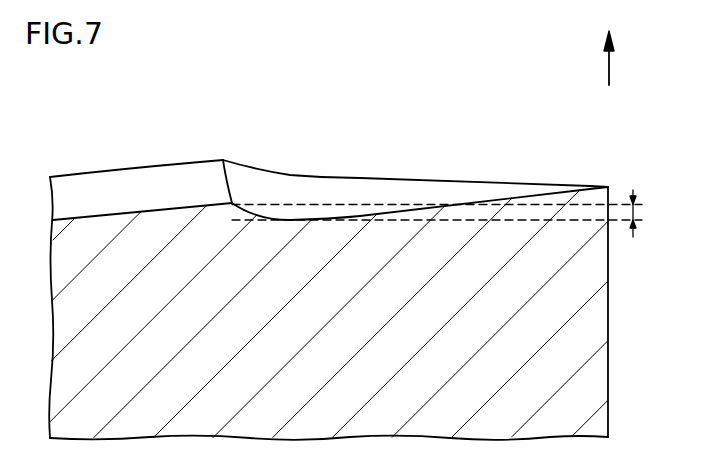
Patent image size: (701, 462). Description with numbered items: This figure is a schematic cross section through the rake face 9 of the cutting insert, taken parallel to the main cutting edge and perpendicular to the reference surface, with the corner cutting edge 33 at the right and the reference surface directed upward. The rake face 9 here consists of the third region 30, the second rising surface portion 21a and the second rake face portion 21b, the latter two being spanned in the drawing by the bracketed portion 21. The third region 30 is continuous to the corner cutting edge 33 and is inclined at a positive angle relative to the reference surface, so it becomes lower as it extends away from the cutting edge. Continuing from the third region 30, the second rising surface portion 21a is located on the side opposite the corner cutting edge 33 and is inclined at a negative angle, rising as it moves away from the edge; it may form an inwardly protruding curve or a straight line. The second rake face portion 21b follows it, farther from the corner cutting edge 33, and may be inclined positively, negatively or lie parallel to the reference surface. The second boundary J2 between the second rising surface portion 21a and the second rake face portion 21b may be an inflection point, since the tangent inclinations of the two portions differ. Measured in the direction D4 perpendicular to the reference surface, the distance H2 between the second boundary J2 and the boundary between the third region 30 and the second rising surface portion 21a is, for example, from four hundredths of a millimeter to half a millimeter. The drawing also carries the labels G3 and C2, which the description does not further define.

The rake face 9 is at (382, 53).
The base layer 21 is at (300, 86).
The second rising surface portion 21a is at (233, 203).
The second rake face portion 21b is at (170, 208).
The third region 30 is at (380, 212).
The corner cutting edge 33 is at (608, 184).
The gap G3 is at (223, 160).
The second boundary J2 is at (233, 202).
The curved surface C2 is at (310, 175).
The direction perpendicular to reference surface D4 is at (612, 70).
The distance H2 is at (456, 213).